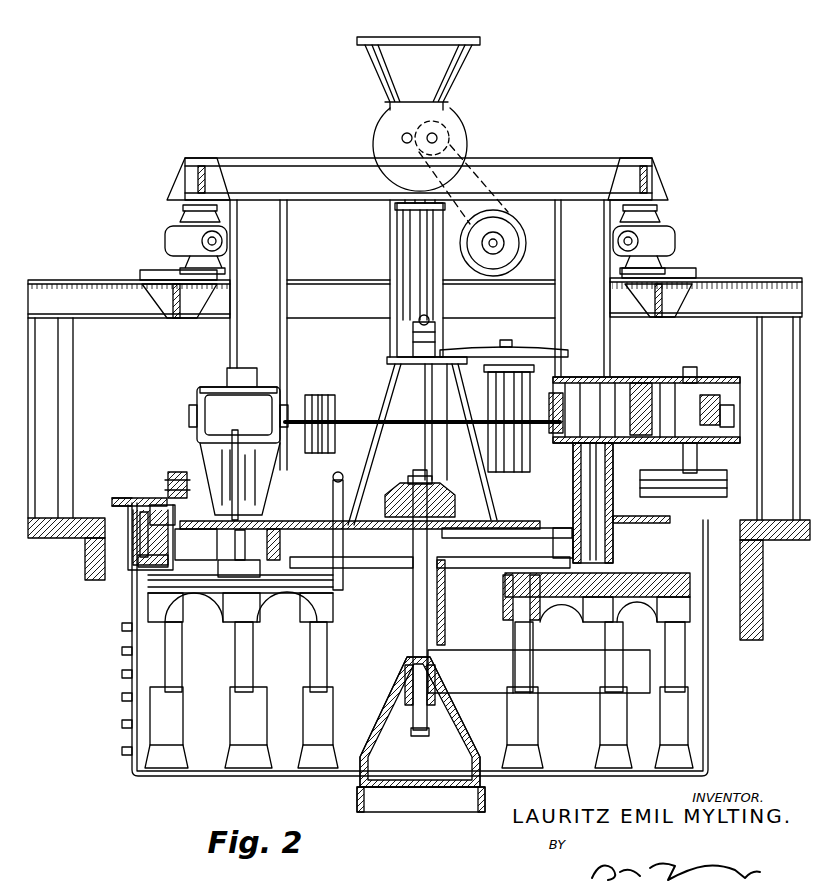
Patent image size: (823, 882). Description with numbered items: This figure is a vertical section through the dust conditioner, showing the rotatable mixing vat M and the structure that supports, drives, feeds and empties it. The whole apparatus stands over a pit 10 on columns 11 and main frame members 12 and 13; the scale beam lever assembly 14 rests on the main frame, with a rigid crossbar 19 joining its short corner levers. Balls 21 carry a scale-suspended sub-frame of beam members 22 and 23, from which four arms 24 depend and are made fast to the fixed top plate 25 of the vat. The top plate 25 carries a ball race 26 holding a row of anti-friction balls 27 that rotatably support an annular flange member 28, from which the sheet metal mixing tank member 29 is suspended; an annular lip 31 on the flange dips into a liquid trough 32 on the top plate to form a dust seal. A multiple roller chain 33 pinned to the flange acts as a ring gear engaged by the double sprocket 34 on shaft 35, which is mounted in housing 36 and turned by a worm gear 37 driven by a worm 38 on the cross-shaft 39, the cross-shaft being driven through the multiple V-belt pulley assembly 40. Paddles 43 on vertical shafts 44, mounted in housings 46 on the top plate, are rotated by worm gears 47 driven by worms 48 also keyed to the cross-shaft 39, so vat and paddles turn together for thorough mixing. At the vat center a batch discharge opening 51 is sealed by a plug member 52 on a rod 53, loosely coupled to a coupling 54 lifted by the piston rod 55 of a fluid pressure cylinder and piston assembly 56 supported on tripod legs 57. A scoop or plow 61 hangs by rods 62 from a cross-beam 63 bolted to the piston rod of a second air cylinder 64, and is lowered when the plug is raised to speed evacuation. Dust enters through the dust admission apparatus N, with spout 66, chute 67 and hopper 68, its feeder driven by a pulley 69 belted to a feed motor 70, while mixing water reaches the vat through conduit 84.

The dust admission apparatus N is at (380, 72).
The hopper 68 is at (445, 92).
The pulley 69 is at (436, 135).
The feed motor 70 is at (502, 230).
The beam member 22 is at (290, 160).
The beam member 23 is at (203, 158).
The arm 24 is at (288, 235).
The ball 21 is at (181, 208).
The scale beam lever assembly 14 is at (163, 242).
The rigid crossbar 19 is at (222, 246).
The main frame member 12 is at (112, 305).
The main frame member 13 is at (177, 318).
The column 11 is at (60, 420).
The pit 10 is at (118, 596).
The mixing vat M is at (118, 688).
The fluid pressure cylinder and piston assembly 56 is at (402, 240).
The chute 67 is at (398, 328).
The cross-beam 63 is at (482, 350).
The second air cylinder 64 is at (490, 386).
The worm 48 is at (562, 388).
The housing 46 is at (212, 400).
The worm gear 47 is at (642, 382).
The housing 36 is at (708, 378).
The worm 38 is at (722, 408).
The worm gear 37 is at (735, 416).
The shaft 35 is at (698, 458).
The double sprocket 34 is at (728, 480).
The piston rod 55 is at (420, 383).
The tripod leg 57 is at (371, 446).
The rod 53 is at (412, 632).
The coupling 54 is at (440, 483).
The cross-shaft 39 is at (340, 420).
The multiple V-belt pulley assembly 40 is at (342, 396).
The multiple roller chain 33 is at (178, 470).
The annular flange member 28 is at (120, 497).
The anti-friction ball 27 is at (160, 498).
The sheet metal mixing tank member 29 is at (130, 530).
The annular lip 31 is at (140, 544).
The liquid trough 32 is at (138, 562).
The ball race 26 is at (300, 520).
The conduit 84 is at (340, 522).
The fixed top plate 25 is at (482, 530).
The spout 66 is at (388, 569).
The vertical shaft 44 is at (566, 535).
The rod 62 is at (437, 633).
The scoop or plow 61 is at (452, 660).
The paddle 43 is at (248, 740).
The plug member 52 is at (388, 712).
The batch discharge opening 51 is at (428, 806).